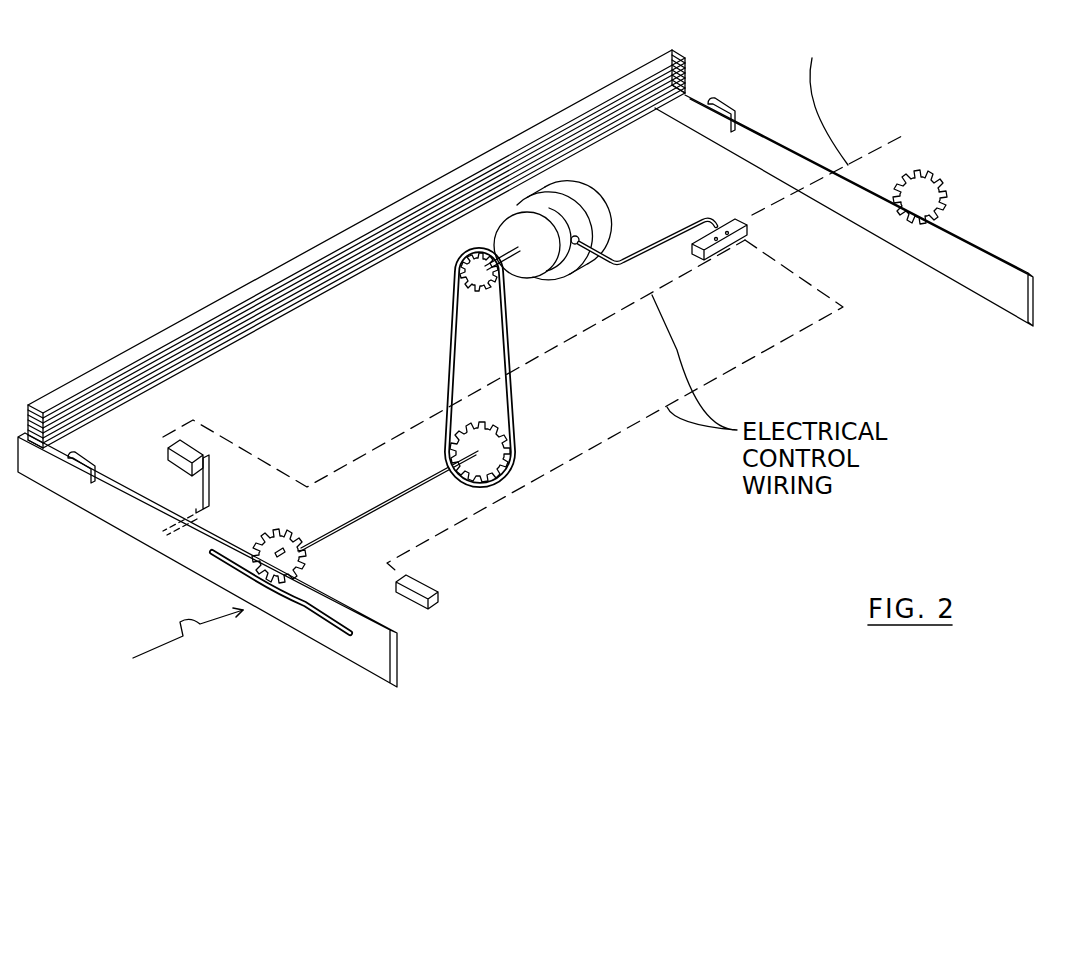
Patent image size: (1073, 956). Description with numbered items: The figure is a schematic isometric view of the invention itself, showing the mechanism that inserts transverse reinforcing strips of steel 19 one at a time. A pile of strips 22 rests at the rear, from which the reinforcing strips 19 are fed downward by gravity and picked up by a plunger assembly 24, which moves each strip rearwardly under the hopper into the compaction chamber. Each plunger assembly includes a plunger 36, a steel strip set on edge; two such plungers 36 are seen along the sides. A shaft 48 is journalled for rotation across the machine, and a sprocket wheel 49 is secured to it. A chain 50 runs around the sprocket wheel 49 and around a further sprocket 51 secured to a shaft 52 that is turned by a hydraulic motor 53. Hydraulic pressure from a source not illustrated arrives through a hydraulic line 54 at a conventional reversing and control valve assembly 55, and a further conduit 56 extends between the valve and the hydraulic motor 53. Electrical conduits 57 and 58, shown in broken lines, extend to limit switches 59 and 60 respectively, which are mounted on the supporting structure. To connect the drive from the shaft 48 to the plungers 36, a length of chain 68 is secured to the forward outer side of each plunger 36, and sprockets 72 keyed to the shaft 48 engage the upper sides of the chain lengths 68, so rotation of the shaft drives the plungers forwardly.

The transverse reinforcing strips of steel 19 is at (407, 205).
The pile of strips 22 is at (183, 357).
The plunger assembly 24 is at (188, 645).
The plunger 36 is at (132, 522).
The shaft 48 is at (440, 474).
The sprocket wheel 49 is at (450, 456).
The chain 50 is at (508, 343).
The further sprocket 51 is at (462, 278).
The shaft 52 is at (512, 223).
The hydraulic motor 53 is at (584, 218).
The hydraulic line 54 is at (906, 142).
The reversing and control valve assembly 55 is at (720, 230).
The further conduit 56 is at (642, 258).
The electrical conduit 57 is at (530, 482).
The electrical conduit 58 is at (368, 452).
The limit switch 59 is at (432, 586).
The limit switch 60 is at (188, 457).
The length of chain 68 is at (316, 618).
The sprockets 72 is at (306, 559).